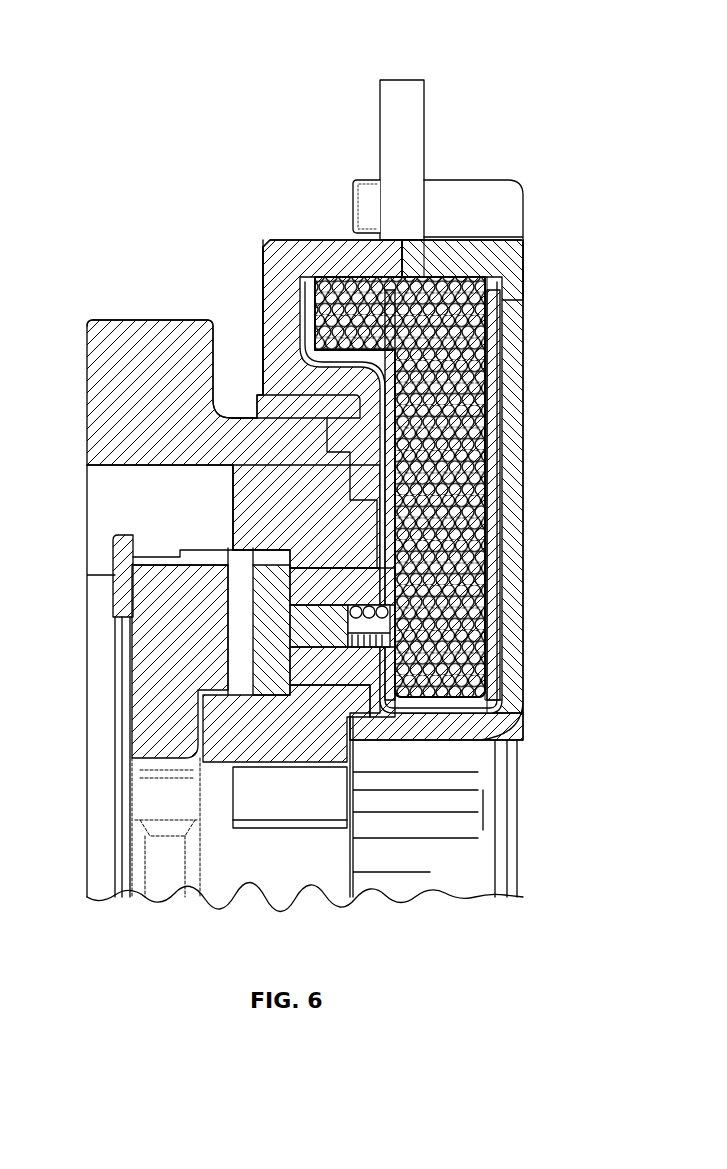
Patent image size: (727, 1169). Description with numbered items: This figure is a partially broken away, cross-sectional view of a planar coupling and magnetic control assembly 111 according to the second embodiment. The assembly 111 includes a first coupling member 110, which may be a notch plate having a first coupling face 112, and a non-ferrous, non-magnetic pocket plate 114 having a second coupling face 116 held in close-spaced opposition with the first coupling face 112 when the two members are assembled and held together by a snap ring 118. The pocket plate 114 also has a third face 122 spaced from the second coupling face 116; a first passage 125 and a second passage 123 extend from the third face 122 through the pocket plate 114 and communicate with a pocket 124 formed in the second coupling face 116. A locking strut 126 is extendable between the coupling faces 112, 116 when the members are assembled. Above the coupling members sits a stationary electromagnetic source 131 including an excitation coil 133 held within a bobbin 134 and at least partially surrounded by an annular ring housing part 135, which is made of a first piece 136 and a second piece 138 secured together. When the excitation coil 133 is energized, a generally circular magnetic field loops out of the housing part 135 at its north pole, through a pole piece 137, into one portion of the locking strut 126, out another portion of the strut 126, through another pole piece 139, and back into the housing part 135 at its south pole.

The first coupling member 110 is at (128, 742).
The coupling and magnetic control assembly 111 is at (478, 92).
The first coupling face 112 is at (230, 608).
The pocket plate 114 is at (137, 316).
The second coupling face 116 is at (232, 518).
The snap ring 118 is at (118, 560).
The third face 122 is at (362, 487).
The second passage 123 is at (322, 680).
The pocket 124 is at (258, 690).
The first passage 125 is at (322, 577).
The locking strut 126 is at (252, 630).
The stationary electromagnetic source 131 is at (465, 487).
The excitation coil 133 is at (445, 385).
The bobbin 134 is at (512, 585).
The annular ring housing part 135 is at (486, 170).
The first piece 136 is at (285, 258).
The pole piece 137 is at (357, 662).
The second piece 138 is at (487, 262).
The pole piece 139 is at (357, 587).